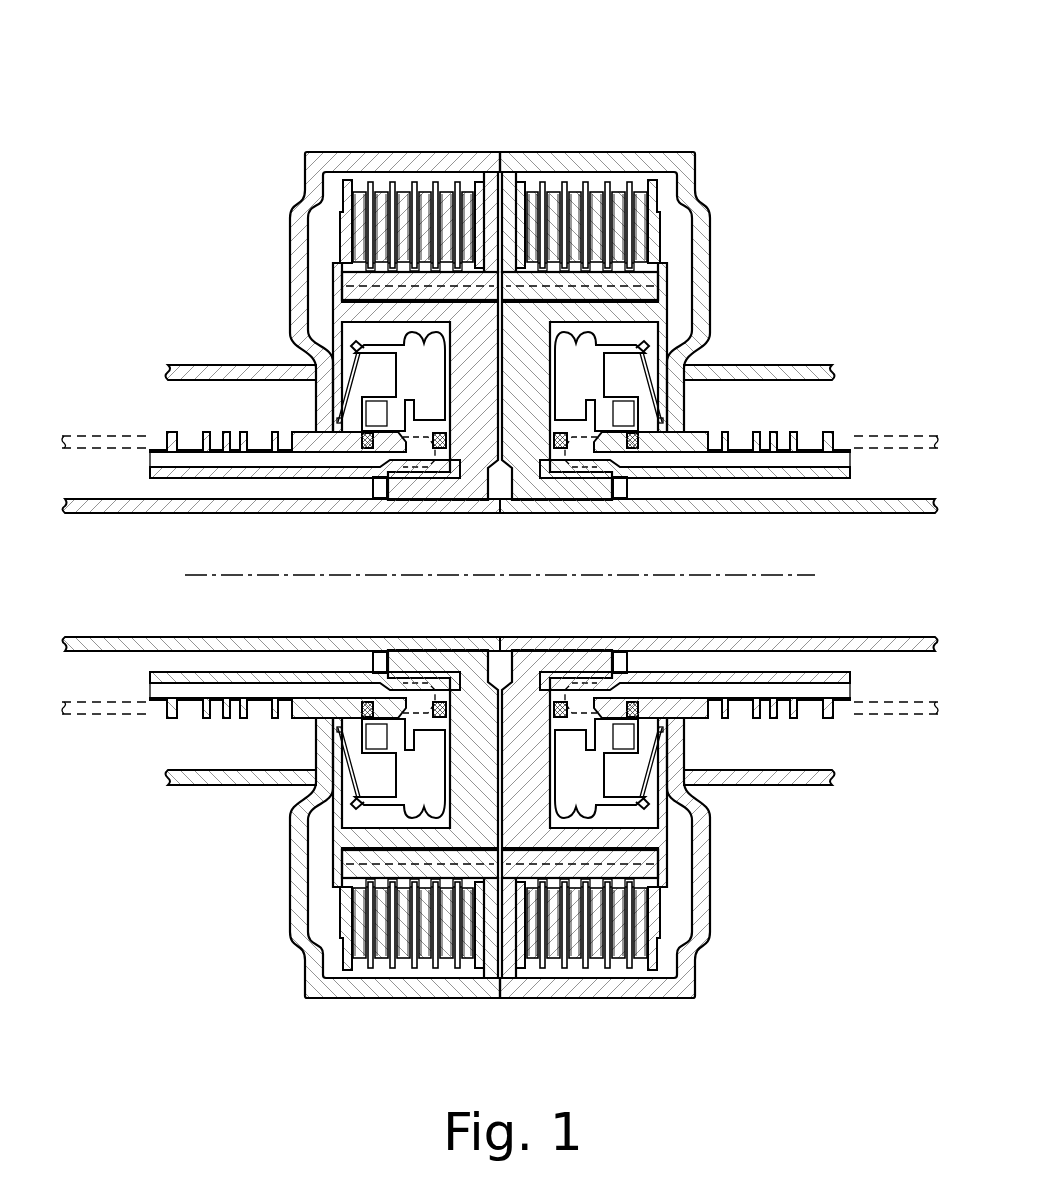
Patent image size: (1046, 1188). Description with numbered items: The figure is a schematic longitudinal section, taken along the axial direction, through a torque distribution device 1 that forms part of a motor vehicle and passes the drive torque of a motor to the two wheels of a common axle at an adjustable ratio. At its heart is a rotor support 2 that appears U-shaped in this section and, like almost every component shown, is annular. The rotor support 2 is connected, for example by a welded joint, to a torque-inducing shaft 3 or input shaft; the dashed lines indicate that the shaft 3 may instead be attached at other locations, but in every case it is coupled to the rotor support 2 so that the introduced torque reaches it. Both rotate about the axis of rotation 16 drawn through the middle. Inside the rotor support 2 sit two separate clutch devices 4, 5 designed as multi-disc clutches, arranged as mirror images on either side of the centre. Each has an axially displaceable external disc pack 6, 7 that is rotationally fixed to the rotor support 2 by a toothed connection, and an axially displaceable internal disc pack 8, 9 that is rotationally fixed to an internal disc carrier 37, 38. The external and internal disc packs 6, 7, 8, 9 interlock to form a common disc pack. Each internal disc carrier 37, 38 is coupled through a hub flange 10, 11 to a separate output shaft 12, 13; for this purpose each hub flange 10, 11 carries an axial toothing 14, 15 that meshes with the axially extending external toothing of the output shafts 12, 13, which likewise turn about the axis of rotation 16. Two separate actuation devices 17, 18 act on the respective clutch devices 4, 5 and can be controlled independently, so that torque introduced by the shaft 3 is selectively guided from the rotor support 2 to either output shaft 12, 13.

The torque distribution device 1 is at (498, 556).
The rotor support 2 is at (335, 153).
The shaft 3 is at (176, 365).
The clutch device 4 is at (446, 106).
The clutch device 5 is at (616, 100).
The external disc pack 6 is at (372, 185).
The external disc pack 7 is at (547, 190).
The internal disc pack 8 is at (474, 190).
The internal disc pack 9 is at (636, 190).
The hub flange 10 is at (472, 360).
The hub flange 11 is at (528, 360).
The output shaft 12 is at (93, 517).
The output shaft 13 is at (896, 517).
The axial toothing 14 is at (414, 505).
The axial toothing 15 is at (556, 505).
The axis of rotation 16 is at (766, 578).
The actuation device 17 is at (273, 249).
The actuation device 18 is at (729, 251).
The internal disc carrier 37 is at (344, 296).
The internal disc carrier 38 is at (656, 289).